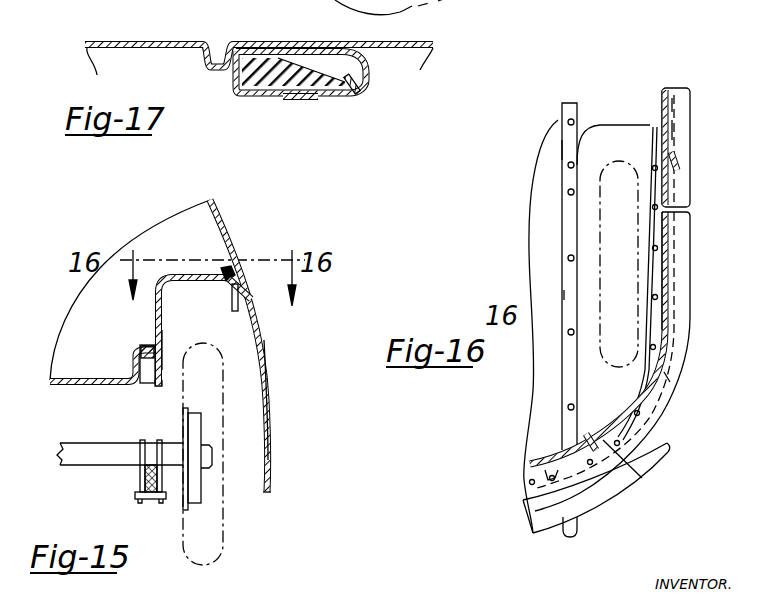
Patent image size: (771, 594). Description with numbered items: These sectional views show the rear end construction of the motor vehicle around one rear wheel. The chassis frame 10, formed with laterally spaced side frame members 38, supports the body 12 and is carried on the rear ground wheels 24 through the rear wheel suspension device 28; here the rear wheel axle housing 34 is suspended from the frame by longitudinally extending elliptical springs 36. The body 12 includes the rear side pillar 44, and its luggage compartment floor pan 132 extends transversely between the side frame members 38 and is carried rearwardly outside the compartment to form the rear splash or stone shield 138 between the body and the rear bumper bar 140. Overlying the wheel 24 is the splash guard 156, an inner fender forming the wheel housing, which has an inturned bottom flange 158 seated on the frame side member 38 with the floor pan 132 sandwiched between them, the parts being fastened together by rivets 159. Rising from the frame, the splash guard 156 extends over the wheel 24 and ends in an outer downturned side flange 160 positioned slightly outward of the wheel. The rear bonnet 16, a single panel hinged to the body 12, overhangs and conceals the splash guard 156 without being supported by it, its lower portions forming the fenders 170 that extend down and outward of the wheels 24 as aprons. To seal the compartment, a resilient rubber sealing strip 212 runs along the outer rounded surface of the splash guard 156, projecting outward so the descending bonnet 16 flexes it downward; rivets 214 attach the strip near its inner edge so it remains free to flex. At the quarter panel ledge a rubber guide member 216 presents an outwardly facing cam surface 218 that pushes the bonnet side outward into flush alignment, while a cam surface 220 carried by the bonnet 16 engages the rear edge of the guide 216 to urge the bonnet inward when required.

In FIG. 15, the chassis frame 10 is at (163, 387).
In FIG. 16, the chassis frame 10 is at (582, 104).
In FIG. 17, the body 12 is at (141, 38).
In FIG. 16, the body 12 is at (696, 160).
In FIG. 15, the rear bonnet 16 is at (270, 385).
In FIG. 16, the rear bonnet 16 is at (694, 325).
In FIG. 15, the rear ground wheel 24 is at (220, 548).
In FIG. 16, the rear ground wheel 24 is at (608, 366).
In FIG. 15, the rear wheel suspension device 28 is at (151, 504).
In FIG. 15, the rear wheel axle housing 34 is at (93, 462).
In FIG. 15, the elliptical spring 36 is at (143, 484).
In FIG. 15, the side frame member 38 is at (168, 350).
In FIG. 16, the side frame member 38 is at (562, 148).
In FIG. 16, the rear side pillar 44 is at (677, 95).
In FIG. 15, the luggage compartment floor pan 132 is at (97, 388).
In FIG. 16, the luggage compartment floor pan 132 is at (532, 205).
In FIG. 16, the rear splash or stone shield 138 is at (541, 512).
In FIG. 16, the rear bumper bar 140 is at (600, 506).
In FIG. 15, the splash guard 156 is at (167, 277).
In FIG. 16, the splash guard 156 is at (618, 138).
In FIG. 15, the inturned flange 158 is at (140, 348).
In FIG. 16, the inturned flange 158 is at (570, 296).
In FIG. 15, the rivets 159 is at (150, 340).
In FIG. 16, the rivets 159 is at (567, 122).
In FIG. 15, the outer downturned side flange 160 is at (244, 306).
In FIG. 15, the rear side panel or fender 170 is at (268, 358).
In FIG. 16, the rear side panel or fender 170 is at (672, 284).
In FIG. 15, the sealing strip 212 is at (228, 270).
In FIG. 16, the sealing strip 212 is at (668, 378).
In FIG. 15, the rivets 214 is at (229, 290).
In FIG. 16, the rivets 214 is at (658, 252).
In FIG. 17, the guide member 216 is at (275, 84).
In FIG. 17, the cam surface 218 is at (300, 58).
In FIG. 17, the cam surface 220 is at (360, 90).